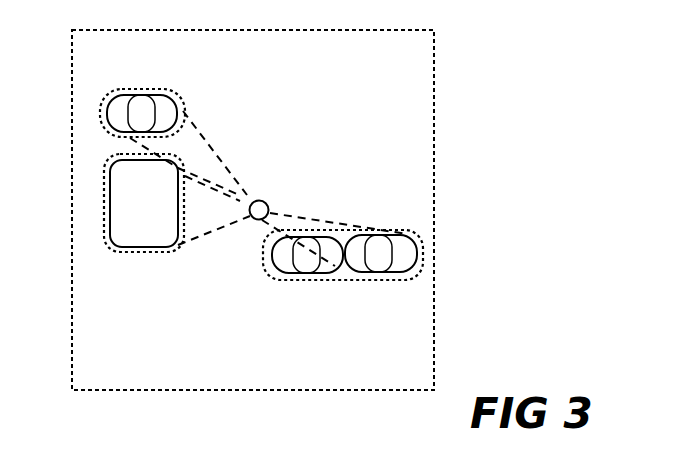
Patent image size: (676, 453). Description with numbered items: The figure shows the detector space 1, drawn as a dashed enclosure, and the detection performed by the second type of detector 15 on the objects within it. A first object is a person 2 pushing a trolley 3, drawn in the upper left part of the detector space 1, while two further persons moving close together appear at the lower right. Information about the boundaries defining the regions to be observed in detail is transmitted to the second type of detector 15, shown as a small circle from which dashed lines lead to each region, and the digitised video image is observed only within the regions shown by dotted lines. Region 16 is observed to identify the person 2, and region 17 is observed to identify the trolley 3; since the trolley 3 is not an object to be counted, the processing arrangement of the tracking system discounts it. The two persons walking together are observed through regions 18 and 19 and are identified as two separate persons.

The detector space 1 is at (433, 153).
The person 2 is at (140, 118).
The trolley 3 is at (137, 207).
The second type of detector 15 is at (262, 208).
The region 16 is at (160, 90).
The region 17 is at (135, 252).
The region 18 is at (280, 274).
The region 19 is at (368, 280).